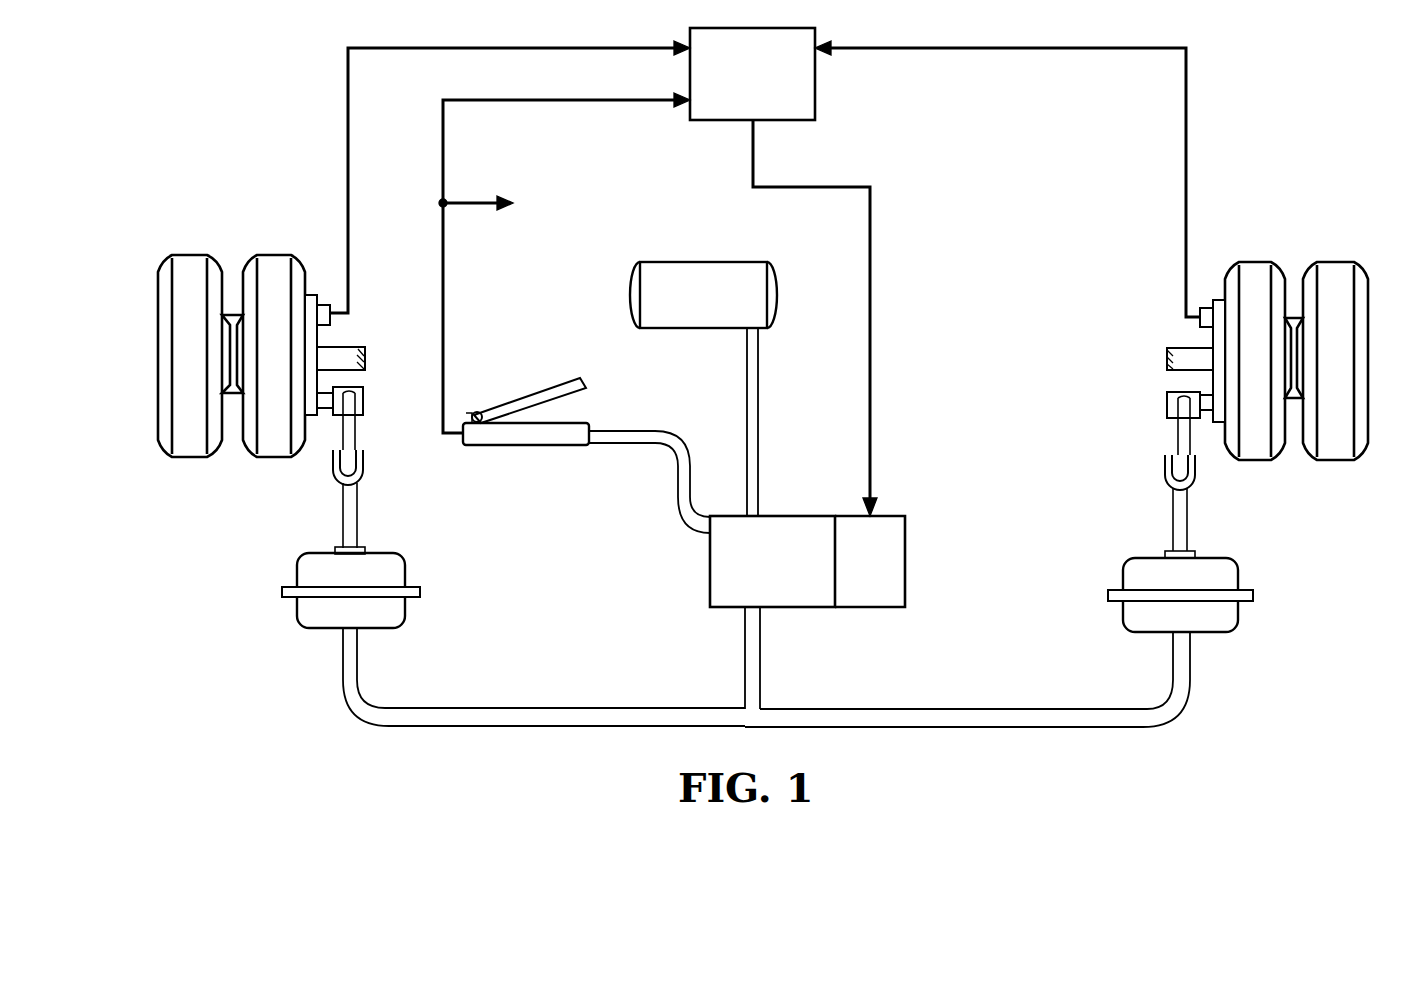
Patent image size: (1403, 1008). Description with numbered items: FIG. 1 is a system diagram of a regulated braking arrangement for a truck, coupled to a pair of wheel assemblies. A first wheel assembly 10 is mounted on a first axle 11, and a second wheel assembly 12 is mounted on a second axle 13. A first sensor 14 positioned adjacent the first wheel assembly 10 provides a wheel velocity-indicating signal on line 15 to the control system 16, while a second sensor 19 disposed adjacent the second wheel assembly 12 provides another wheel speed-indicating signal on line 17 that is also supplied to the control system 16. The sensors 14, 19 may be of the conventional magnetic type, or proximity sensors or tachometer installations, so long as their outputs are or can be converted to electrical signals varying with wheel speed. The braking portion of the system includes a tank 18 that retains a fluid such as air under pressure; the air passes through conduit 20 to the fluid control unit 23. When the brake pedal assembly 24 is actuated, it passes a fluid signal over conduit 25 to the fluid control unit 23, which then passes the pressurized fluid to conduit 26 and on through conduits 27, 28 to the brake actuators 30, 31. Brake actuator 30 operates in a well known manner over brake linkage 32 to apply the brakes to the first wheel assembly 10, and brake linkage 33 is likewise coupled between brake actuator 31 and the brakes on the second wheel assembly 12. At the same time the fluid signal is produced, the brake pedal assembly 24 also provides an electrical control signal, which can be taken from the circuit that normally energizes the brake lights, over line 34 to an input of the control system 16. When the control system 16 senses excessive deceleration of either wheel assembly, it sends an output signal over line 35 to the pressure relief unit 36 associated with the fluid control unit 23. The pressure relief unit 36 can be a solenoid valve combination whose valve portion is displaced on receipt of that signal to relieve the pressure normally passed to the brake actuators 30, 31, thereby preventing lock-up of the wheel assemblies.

The first wheel assembly 10 is at (247, 485).
The first axle 11 is at (345, 354).
The second wheel assembly 12 is at (1305, 485).
The second axle 13 is at (1183, 355).
The first sensor 14 is at (330, 303).
The line 15 is at (348, 128).
The control system 16 is at (752, 61).
The line 17 is at (1186, 155).
The tank 18 is at (703, 280).
The second sensor 19 is at (1205, 308).
The conduit 20 is at (735, 422).
The fluid control unit 23 is at (757, 561).
The brake pedal assembly 24 is at (526, 404).
The conduit 25 is at (615, 444).
The conduit 26 is at (769, 658).
The conduit 27 is at (580, 708).
The conduit 28 is at (920, 713).
The brake actuator 30 is at (294, 599).
The brake actuator 31 is at (1235, 606).
The brake linkage 32 is at (353, 467).
The brake linkage 33 is at (1178, 471).
The line 34 is at (443, 296).
The line 35 is at (870, 331).
The pressure relief unit 36 is at (905, 552).